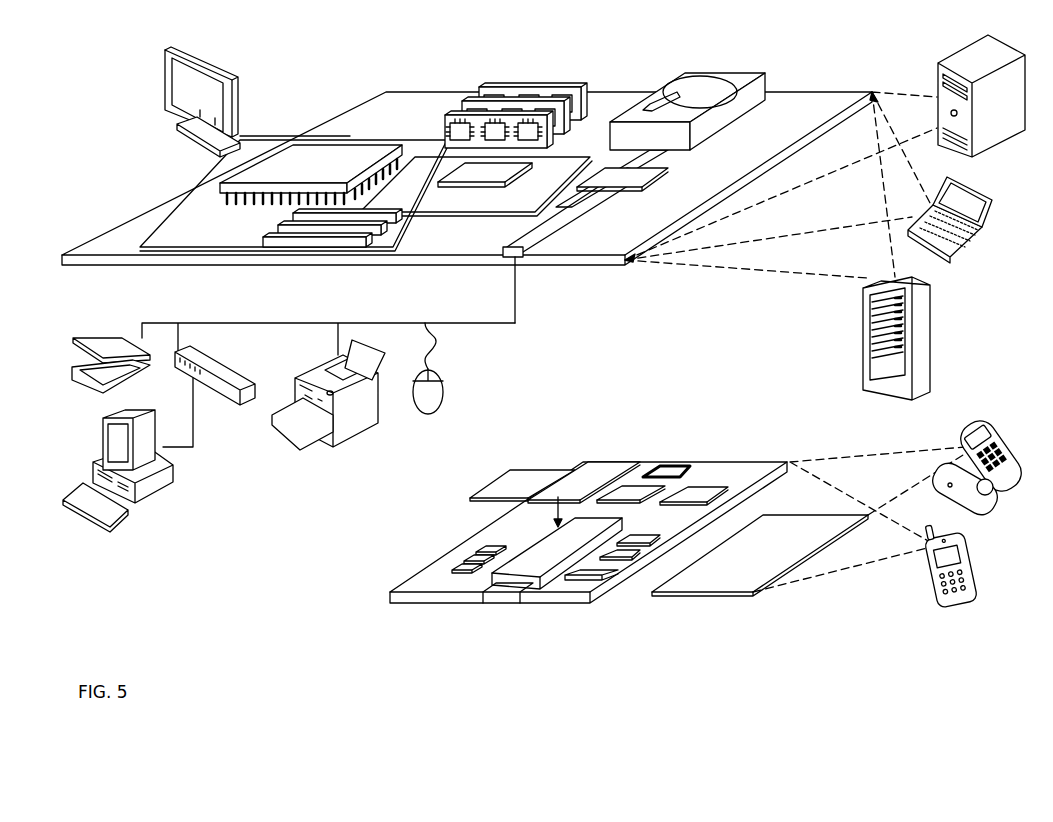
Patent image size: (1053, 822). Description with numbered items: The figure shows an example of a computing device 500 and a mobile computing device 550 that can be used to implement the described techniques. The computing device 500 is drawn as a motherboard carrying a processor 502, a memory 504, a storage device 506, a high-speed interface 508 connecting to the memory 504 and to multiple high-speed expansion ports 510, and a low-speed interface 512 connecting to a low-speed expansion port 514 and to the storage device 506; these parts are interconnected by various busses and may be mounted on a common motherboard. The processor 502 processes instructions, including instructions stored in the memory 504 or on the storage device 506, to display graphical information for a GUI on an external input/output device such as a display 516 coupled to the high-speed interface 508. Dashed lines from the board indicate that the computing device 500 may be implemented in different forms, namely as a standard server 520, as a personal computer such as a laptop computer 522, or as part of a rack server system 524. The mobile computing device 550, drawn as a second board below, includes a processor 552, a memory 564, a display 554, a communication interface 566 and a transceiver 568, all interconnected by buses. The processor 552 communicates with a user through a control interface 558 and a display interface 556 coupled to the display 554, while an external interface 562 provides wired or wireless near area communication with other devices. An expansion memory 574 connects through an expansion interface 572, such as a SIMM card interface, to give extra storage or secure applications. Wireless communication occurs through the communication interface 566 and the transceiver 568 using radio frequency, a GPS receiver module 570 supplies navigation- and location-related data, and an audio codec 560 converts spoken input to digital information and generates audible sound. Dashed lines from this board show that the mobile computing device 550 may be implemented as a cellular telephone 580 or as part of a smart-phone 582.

The computing device 500 is at (327, 68).
The processor 502 is at (220, 186).
The memory 504 is at (495, 88).
The storage device 506 is at (682, 74).
The high-speed interface 508 is at (467, 173).
The high-speed expansion ports 510 is at (264, 238).
The low-speed interface 512 is at (607, 172).
The low-speed expansion port 514 is at (528, 258).
The display 516 is at (170, 53).
The standard server 520 is at (936, 76).
The laptop computer 522 is at (954, 253).
The rack server system 524 is at (864, 362).
The mobile computing device 550 is at (383, 601).
The processor 552 is at (539, 575).
The display 554 is at (725, 586).
The display interface 556 is at (588, 577).
The control interface 558 is at (620, 558).
The audio codec 560 is at (638, 540).
The external interface 562 is at (492, 604).
The memory 564 is at (459, 568).
The communication interface 566 is at (628, 495).
The transceiver 568 is at (693, 493).
The GPS receiver module 570 is at (664, 468).
The expansion interface 572 is at (575, 489).
The expansion memory 574 is at (514, 497).
The cellular telephone 580 is at (970, 432).
The smart-phone 582 is at (930, 562).